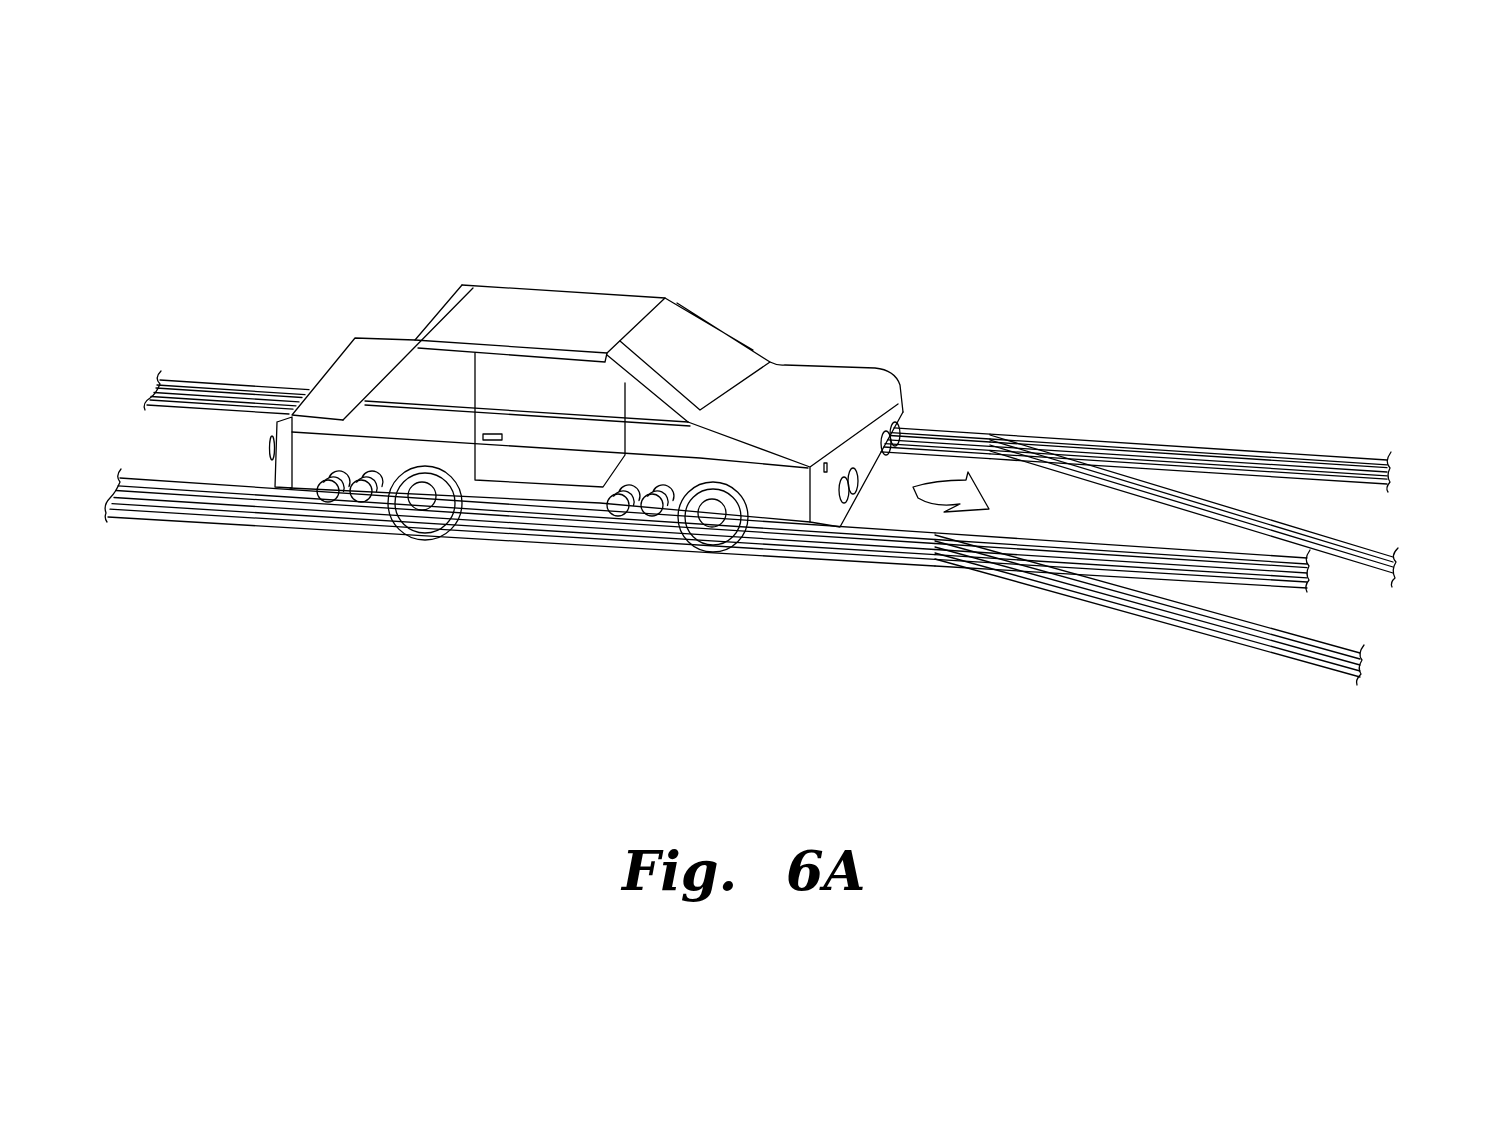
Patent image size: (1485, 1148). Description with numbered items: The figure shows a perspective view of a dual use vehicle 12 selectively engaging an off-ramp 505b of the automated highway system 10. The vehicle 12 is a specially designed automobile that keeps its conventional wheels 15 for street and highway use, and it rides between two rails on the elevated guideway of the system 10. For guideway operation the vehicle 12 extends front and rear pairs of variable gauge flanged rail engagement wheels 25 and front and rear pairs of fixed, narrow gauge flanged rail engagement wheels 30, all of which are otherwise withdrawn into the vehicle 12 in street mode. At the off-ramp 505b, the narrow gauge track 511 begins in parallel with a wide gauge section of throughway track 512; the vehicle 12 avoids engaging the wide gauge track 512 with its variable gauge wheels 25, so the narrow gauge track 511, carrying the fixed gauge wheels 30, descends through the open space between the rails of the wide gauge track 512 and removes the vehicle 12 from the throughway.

The automated highway system 10 is at (1235, 172).
The dual use vehicle 12 is at (598, 268).
The conventional wheels 15 is at (445, 498).
The variable gauge flanged rail engagement wheels 25 is at (360, 500).
The fixed gauge flanged rail engagement wheels 30 is at (330, 493).
The off-ramp 505b is at (1061, 638).
The narrow gauge track 511 is at (1360, 533).
The wide gauge track 512 is at (1222, 446).